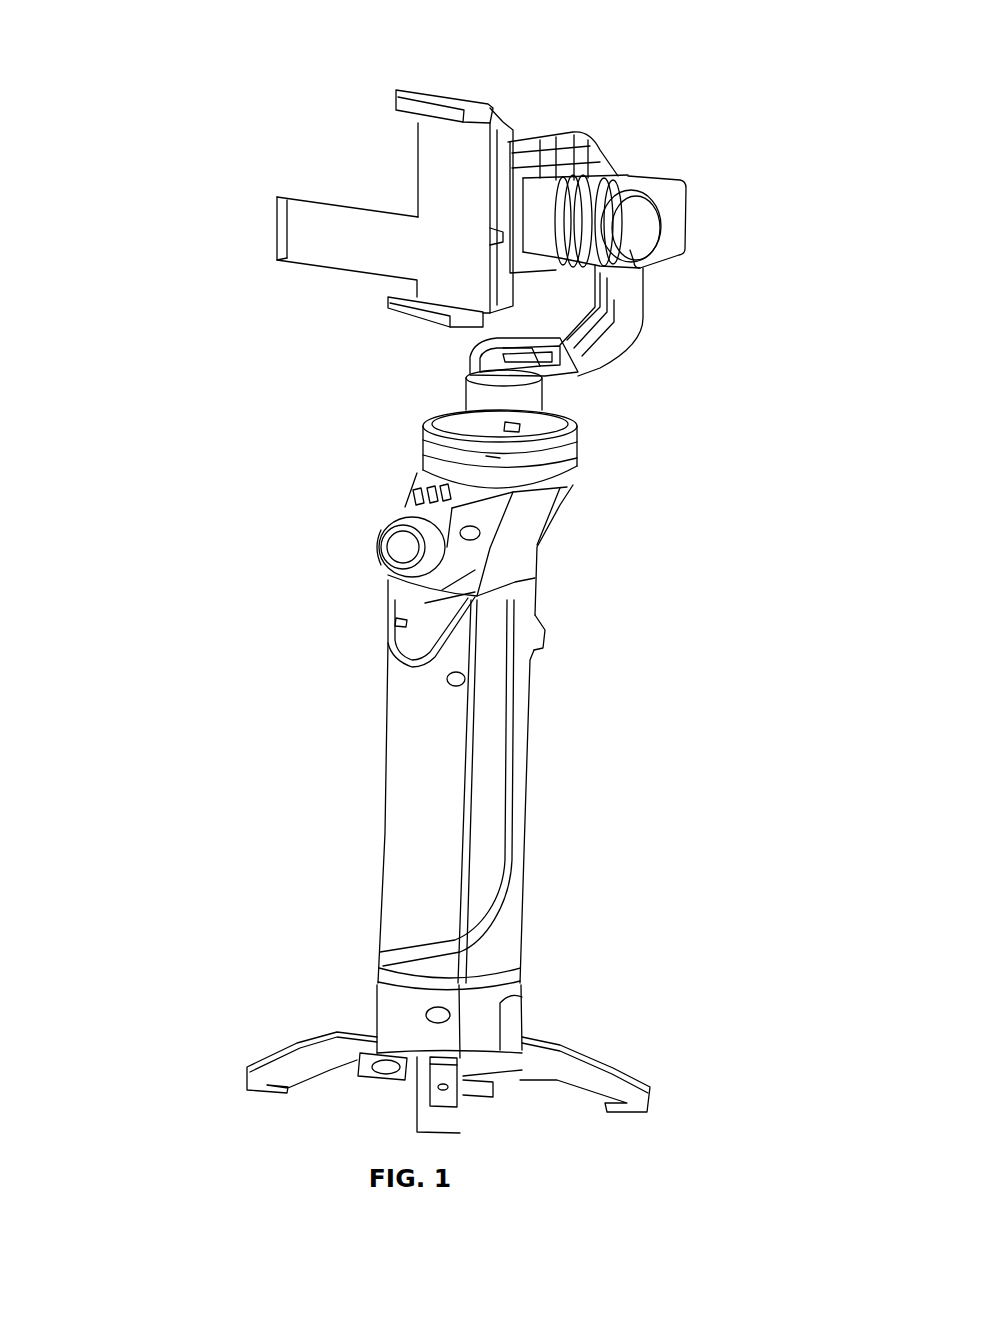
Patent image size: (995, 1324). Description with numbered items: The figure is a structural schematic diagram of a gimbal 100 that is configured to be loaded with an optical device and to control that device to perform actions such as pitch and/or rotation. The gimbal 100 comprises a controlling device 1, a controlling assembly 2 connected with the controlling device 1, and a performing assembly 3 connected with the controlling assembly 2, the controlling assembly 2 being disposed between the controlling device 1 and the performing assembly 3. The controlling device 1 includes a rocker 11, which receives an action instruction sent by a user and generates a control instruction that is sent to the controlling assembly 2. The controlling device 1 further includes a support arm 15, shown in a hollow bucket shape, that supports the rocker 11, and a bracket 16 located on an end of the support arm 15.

The gimbal 100 is at (479, 50).
The controlling device 1 is at (122, 660).
The controlling assembly 2 is at (533, 473).
The performing assembly 3 is at (433, 247).
The rocker 11 is at (403, 555).
The support arm 15 is at (405, 802).
The bracket 16 is at (312, 1060).